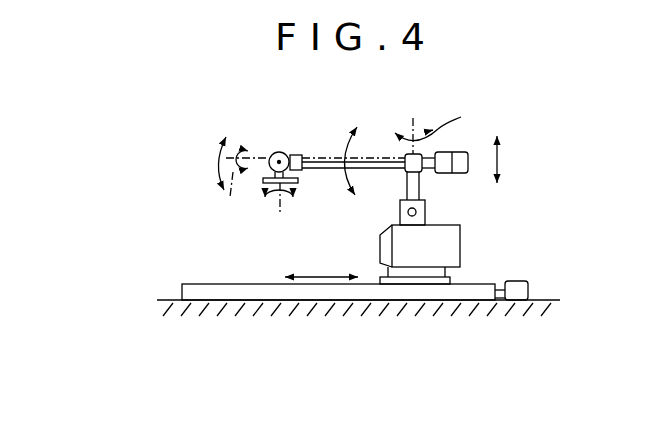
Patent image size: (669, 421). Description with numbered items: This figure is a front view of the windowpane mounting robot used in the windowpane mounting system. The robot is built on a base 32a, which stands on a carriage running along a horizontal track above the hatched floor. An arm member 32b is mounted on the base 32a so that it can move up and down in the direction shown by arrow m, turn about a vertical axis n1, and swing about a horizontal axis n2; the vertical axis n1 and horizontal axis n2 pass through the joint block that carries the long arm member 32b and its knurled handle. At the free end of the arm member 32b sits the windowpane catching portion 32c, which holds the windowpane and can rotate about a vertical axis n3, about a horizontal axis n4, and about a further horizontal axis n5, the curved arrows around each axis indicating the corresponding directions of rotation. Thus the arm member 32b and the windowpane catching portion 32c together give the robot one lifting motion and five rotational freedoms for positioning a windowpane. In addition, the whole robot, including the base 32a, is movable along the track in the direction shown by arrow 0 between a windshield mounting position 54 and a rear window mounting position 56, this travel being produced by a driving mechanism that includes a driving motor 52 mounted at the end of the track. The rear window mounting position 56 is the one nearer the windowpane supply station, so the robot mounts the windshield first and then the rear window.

The base 32a is at (460, 243).
The arm member 32b is at (373, 159).
The windowpane catching portion 32c is at (299, 177).
The driving motor 52 is at (528, 282).
The windshield mounting position 54 is at (423, 294).
The rear window mounting position 56 is at (257, 294).
The vertical axis n1 is at (416, 116).
The horizontal axis n2 is at (416, 165).
The vertical axis n3 is at (284, 215).
The horizontal axis n4 is at (226, 201).
The horizontal axis n5 is at (278, 161).
The arrow m is at (500, 160).
The horizontal movement 0 is at (328, 275).